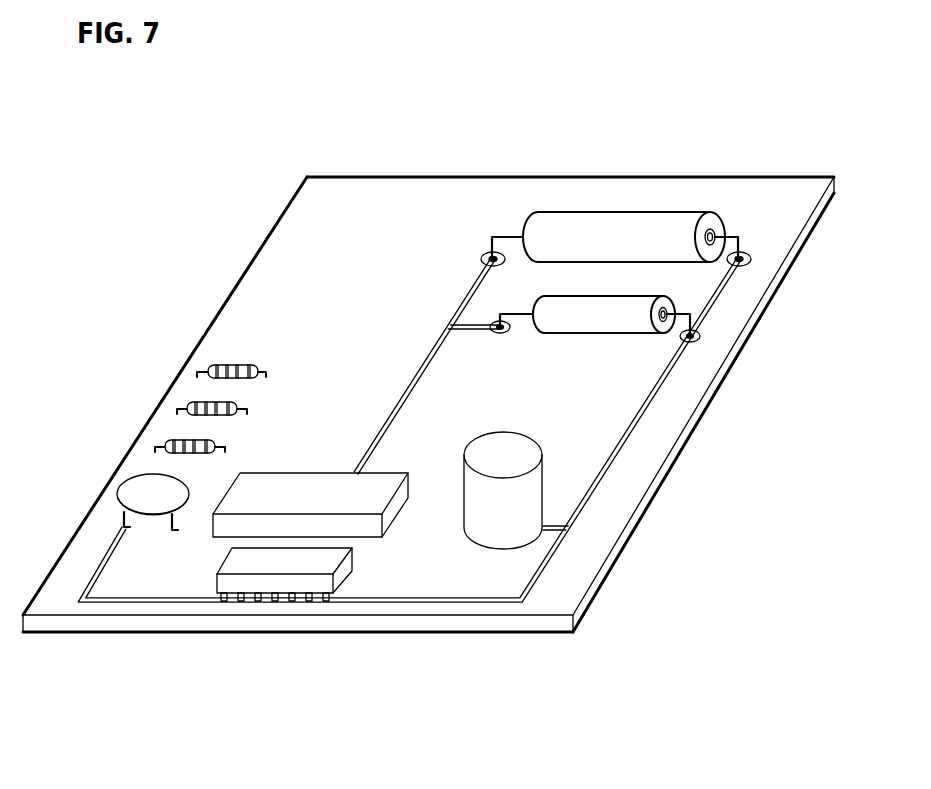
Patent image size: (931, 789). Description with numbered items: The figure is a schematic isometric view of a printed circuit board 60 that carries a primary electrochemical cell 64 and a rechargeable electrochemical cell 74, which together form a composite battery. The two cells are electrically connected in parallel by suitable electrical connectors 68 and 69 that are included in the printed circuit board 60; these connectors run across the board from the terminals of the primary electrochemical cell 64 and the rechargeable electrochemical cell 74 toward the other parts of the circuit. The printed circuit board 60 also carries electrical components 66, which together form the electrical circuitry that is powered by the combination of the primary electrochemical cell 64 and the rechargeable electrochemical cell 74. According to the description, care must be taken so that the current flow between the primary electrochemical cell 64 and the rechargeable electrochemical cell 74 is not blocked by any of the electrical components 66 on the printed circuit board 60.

The printed circuit board 60 is at (423, 158).
The primary electrochemical cell 64 is at (660, 227).
The electrical components 66 is at (480, 538).
The electrical connector 68 is at (608, 476).
The electrical connector 69 is at (421, 362).
The rechargeable electrochemical cell 74 is at (638, 328).